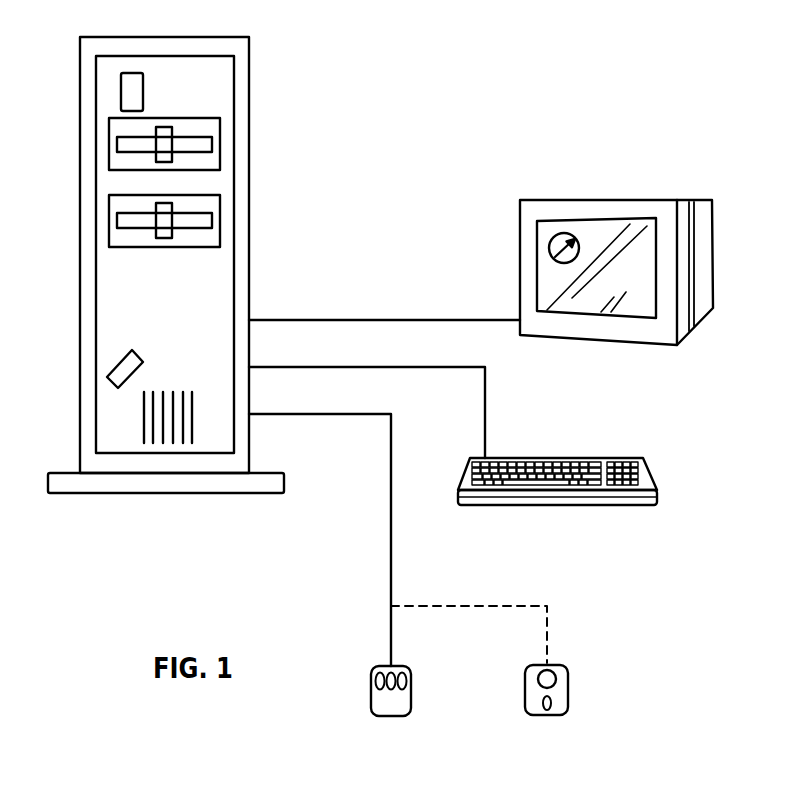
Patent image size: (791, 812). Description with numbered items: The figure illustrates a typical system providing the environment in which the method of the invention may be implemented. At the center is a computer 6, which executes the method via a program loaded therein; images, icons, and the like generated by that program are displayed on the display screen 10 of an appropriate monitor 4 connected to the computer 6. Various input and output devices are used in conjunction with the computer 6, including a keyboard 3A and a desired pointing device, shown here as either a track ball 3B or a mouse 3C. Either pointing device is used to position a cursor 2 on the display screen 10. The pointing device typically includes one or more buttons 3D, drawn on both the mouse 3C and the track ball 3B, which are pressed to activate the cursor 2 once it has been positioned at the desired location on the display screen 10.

The computer 6 is at (190, 37).
The monitor 4 is at (595, 269).
The display screen 10 is at (621, 284).
The cursor 2 is at (558, 234).
The keyboard 3A is at (635, 457).
The track ball 3B is at (568, 681).
The mouse 3C is at (411, 697).
The buttons 3D is at (371, 690).